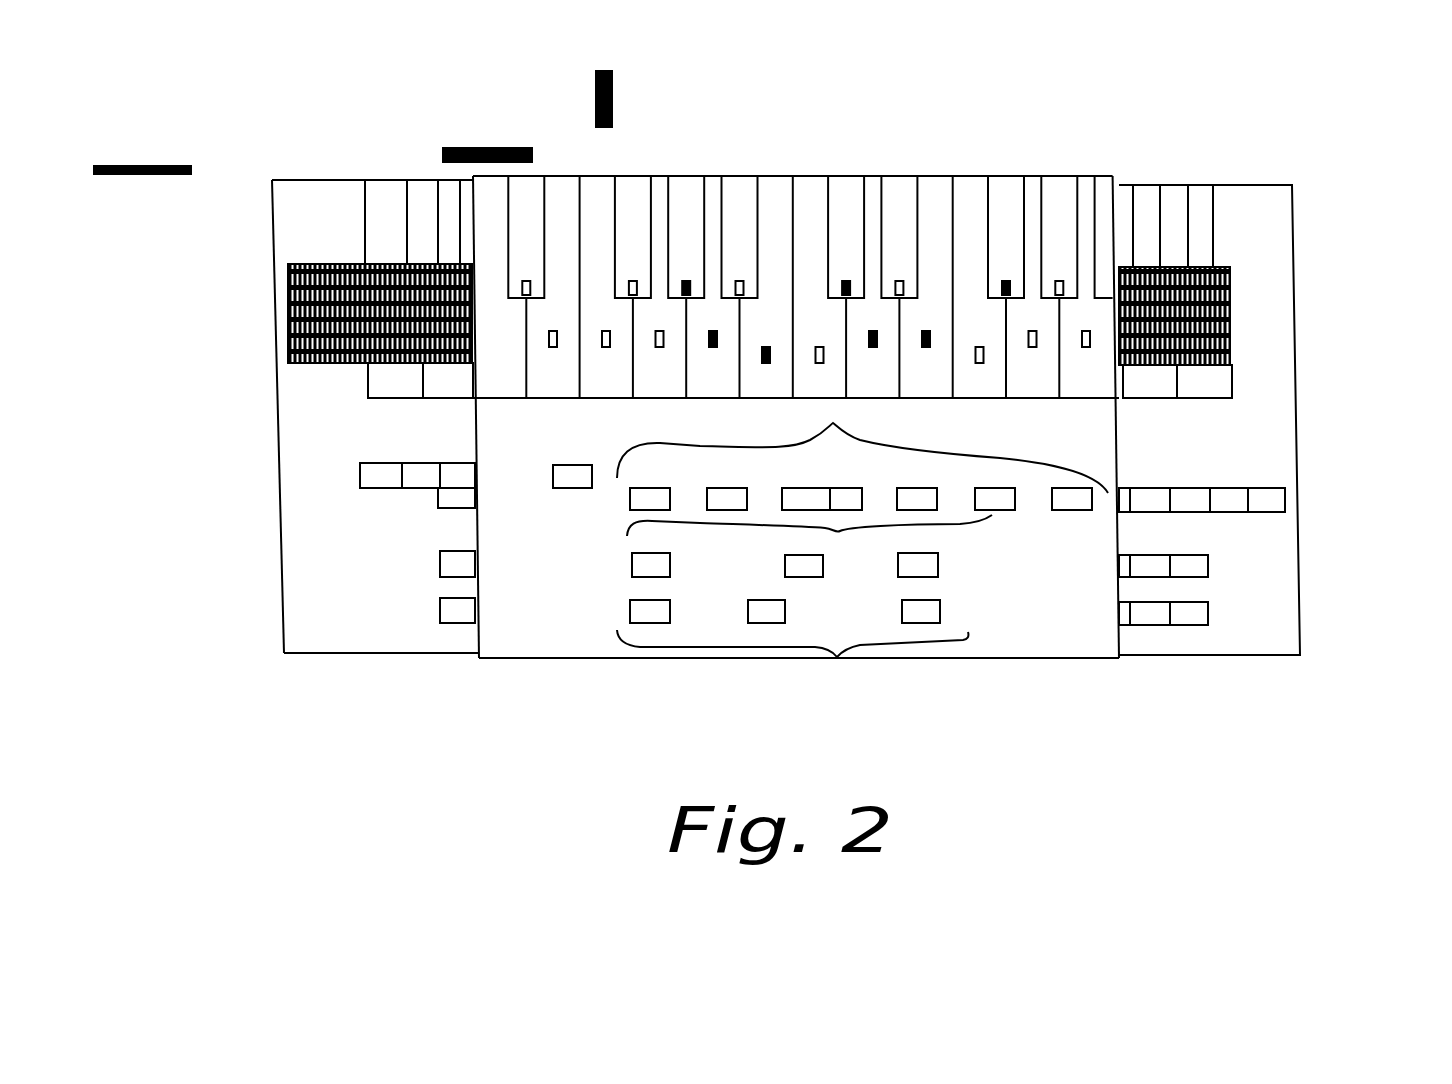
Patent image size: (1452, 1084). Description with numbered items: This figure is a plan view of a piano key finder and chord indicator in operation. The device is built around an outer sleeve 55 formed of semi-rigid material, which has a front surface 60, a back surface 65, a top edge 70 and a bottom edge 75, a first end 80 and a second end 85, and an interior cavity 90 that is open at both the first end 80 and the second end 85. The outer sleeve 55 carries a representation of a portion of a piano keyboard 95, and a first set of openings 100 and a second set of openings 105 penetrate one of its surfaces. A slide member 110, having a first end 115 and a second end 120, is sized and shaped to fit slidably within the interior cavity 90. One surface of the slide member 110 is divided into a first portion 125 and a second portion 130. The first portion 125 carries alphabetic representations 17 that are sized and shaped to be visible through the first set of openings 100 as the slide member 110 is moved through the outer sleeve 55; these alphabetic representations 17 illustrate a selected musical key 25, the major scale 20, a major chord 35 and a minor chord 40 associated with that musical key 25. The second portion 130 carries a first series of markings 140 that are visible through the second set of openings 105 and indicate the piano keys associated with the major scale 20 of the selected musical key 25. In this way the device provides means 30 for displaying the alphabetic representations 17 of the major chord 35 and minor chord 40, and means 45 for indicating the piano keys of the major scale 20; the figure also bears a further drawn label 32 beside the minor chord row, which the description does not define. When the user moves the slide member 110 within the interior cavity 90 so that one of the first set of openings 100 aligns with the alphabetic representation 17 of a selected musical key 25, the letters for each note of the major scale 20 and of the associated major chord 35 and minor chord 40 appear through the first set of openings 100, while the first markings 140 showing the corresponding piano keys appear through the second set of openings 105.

The alphabetic representations 17 is at (632, 505).
The major scale 20 is at (862, 453).
The selected musical key 25 is at (552, 488).
The means for displaying alphabetic representations of major and minor chords 30 is at (670, 563).
The minor chord display 32 is at (785, 612).
The major chord 35 is at (995, 556).
The minor chord 40 is at (837, 658).
The means for indicating piano keys 45 is at (765, 347).
The outer sleeve 55 is at (1075, 642).
The front surface 60 is at (517, 642).
The back surface 65 is at (556, 658).
The top edge 70 is at (920, 178).
The bottom edge 75 is at (958, 660).
The first end 80 is at (473, 440).
The second end 85 is at (1119, 432).
The interior cavity 90 is at (1128, 462).
The representation of a portion of a piano keyboard 95 is at (566, 188).
The first set of openings 100 is at (937, 500).
The second set of openings 105 is at (687, 268).
The slide member 110 is at (290, 180).
The first end 115 is at (1298, 300).
The second end 120 is at (283, 400).
The first portion 125 is at (283, 530).
The second portion 130 is at (273, 248).
The first series of markings 140 is at (320, 272).